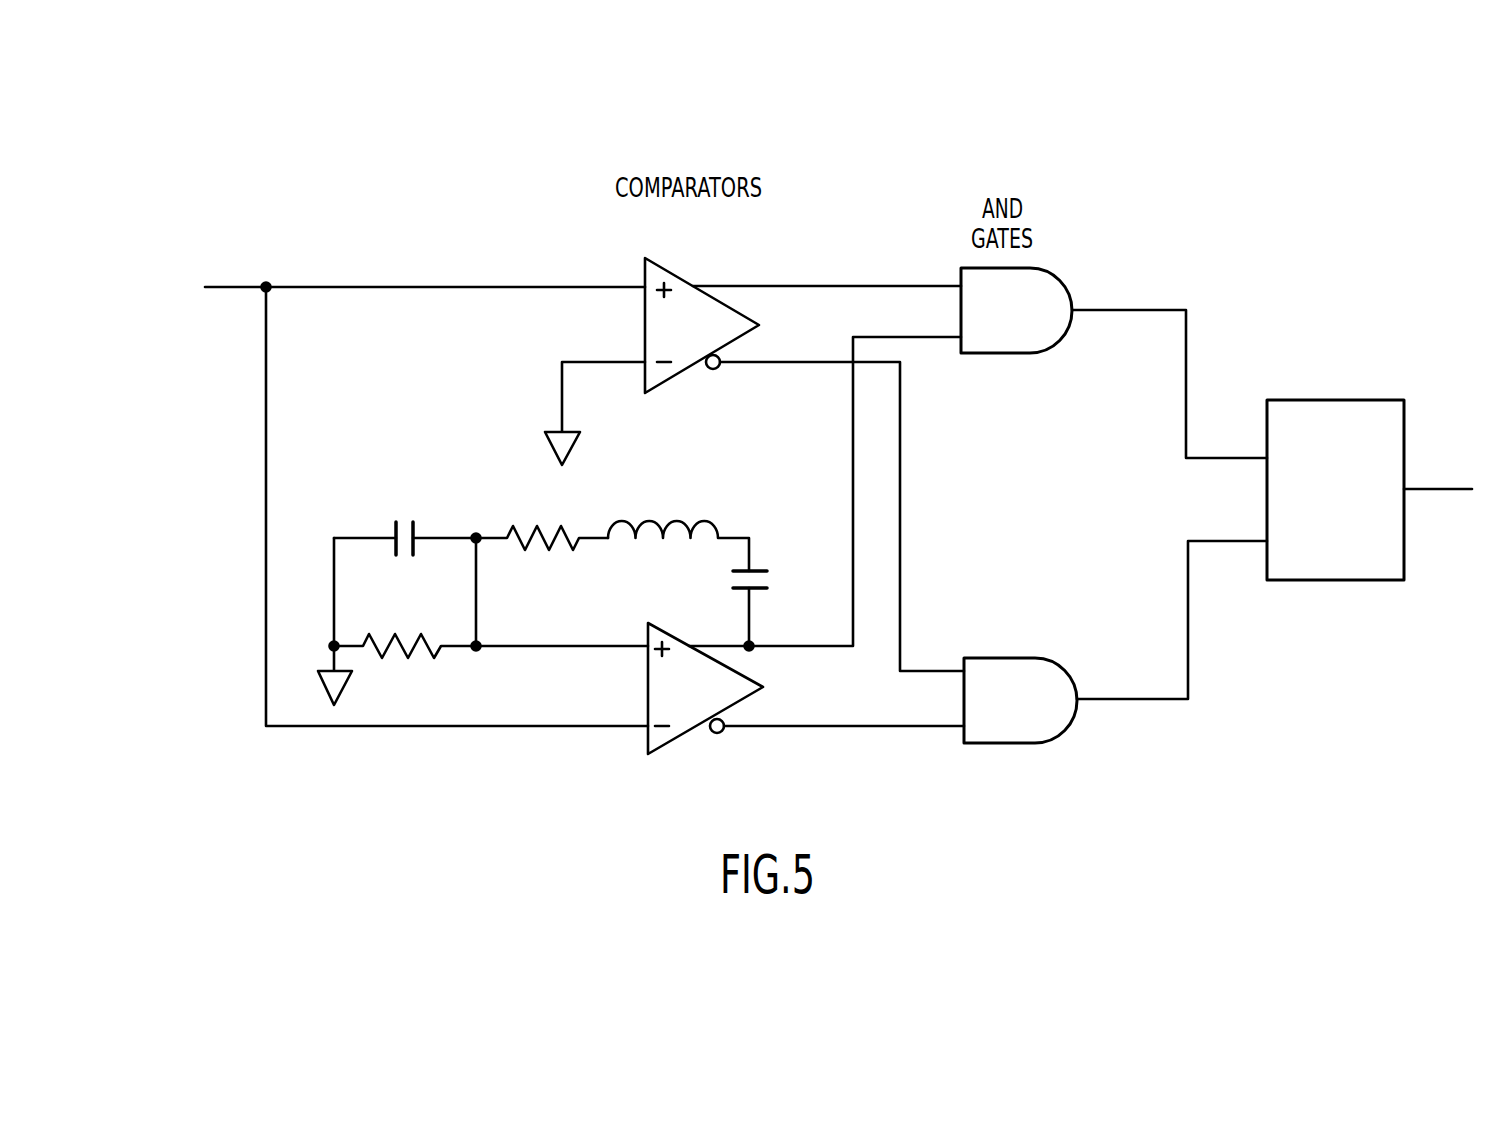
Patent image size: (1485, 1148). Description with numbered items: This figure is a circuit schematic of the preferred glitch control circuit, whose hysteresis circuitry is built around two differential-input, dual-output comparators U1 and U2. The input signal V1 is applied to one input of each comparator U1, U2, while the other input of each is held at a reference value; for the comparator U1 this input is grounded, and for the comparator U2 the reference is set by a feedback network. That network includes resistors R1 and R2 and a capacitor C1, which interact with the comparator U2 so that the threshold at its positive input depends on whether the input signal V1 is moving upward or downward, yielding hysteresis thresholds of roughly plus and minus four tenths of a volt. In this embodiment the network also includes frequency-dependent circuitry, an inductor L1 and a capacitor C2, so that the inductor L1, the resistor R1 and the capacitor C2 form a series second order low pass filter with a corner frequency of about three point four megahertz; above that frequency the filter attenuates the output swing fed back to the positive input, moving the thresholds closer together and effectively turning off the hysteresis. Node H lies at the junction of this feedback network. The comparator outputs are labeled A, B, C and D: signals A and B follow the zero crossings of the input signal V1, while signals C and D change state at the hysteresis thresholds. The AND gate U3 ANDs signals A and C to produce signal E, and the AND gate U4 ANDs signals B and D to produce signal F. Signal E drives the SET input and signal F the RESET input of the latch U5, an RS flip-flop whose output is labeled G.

The input signal V1 is at (404, 285).
The comparator U1 is at (652, 343).
The comparator U2 is at (705, 705).
The AND gate U3 is at (1016, 332).
The AND gate U4 is at (1020, 676).
The latch U5 is at (1332, 450).
The resistor R1 is at (542, 518).
The resistor R2 is at (397, 621).
The capacitor C1 is at (770, 605).
The capacitor C2 is at (405, 521).
The inductor L1 is at (678, 529).
The signal A is at (827, 265).
The signal B is at (842, 499).
The signal C is at (718, 508).
The signal D is at (615, 506).
The signal E is at (1169, 364).
The signal F is at (1172, 620).
The flip flop output signal G is at (1438, 465).
The filter node H is at (480, 614).